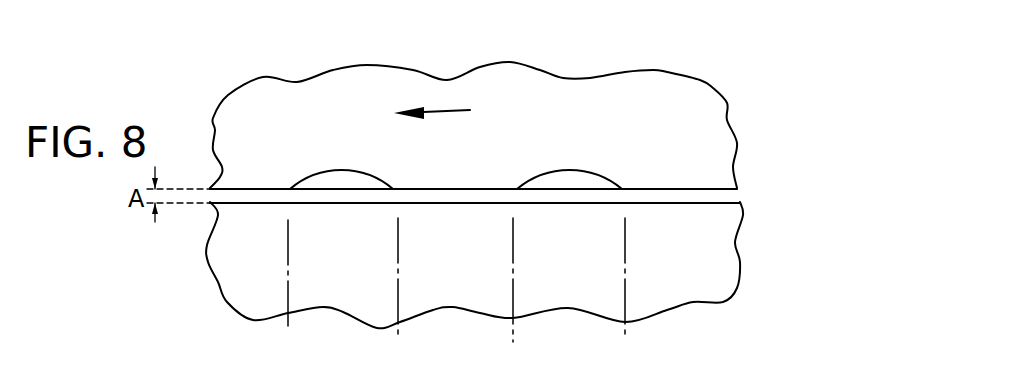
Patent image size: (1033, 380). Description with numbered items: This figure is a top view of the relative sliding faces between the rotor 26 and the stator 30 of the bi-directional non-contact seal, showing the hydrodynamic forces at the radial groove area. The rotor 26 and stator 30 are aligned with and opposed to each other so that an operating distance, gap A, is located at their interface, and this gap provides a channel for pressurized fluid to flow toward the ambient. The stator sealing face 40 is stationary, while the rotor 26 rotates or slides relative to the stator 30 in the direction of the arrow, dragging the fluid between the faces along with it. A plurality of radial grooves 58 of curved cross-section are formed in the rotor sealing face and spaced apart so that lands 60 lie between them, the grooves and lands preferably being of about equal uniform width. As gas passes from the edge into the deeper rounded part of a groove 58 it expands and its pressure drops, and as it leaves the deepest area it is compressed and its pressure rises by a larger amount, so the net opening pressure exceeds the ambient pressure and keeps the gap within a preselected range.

The rotor 26 is at (667, 72).
The stator 30 is at (735, 240).
The stator sealing face 40 is at (466, 204).
The radial grooves 58 is at (340, 170).
The lands 60 is at (448, 189).